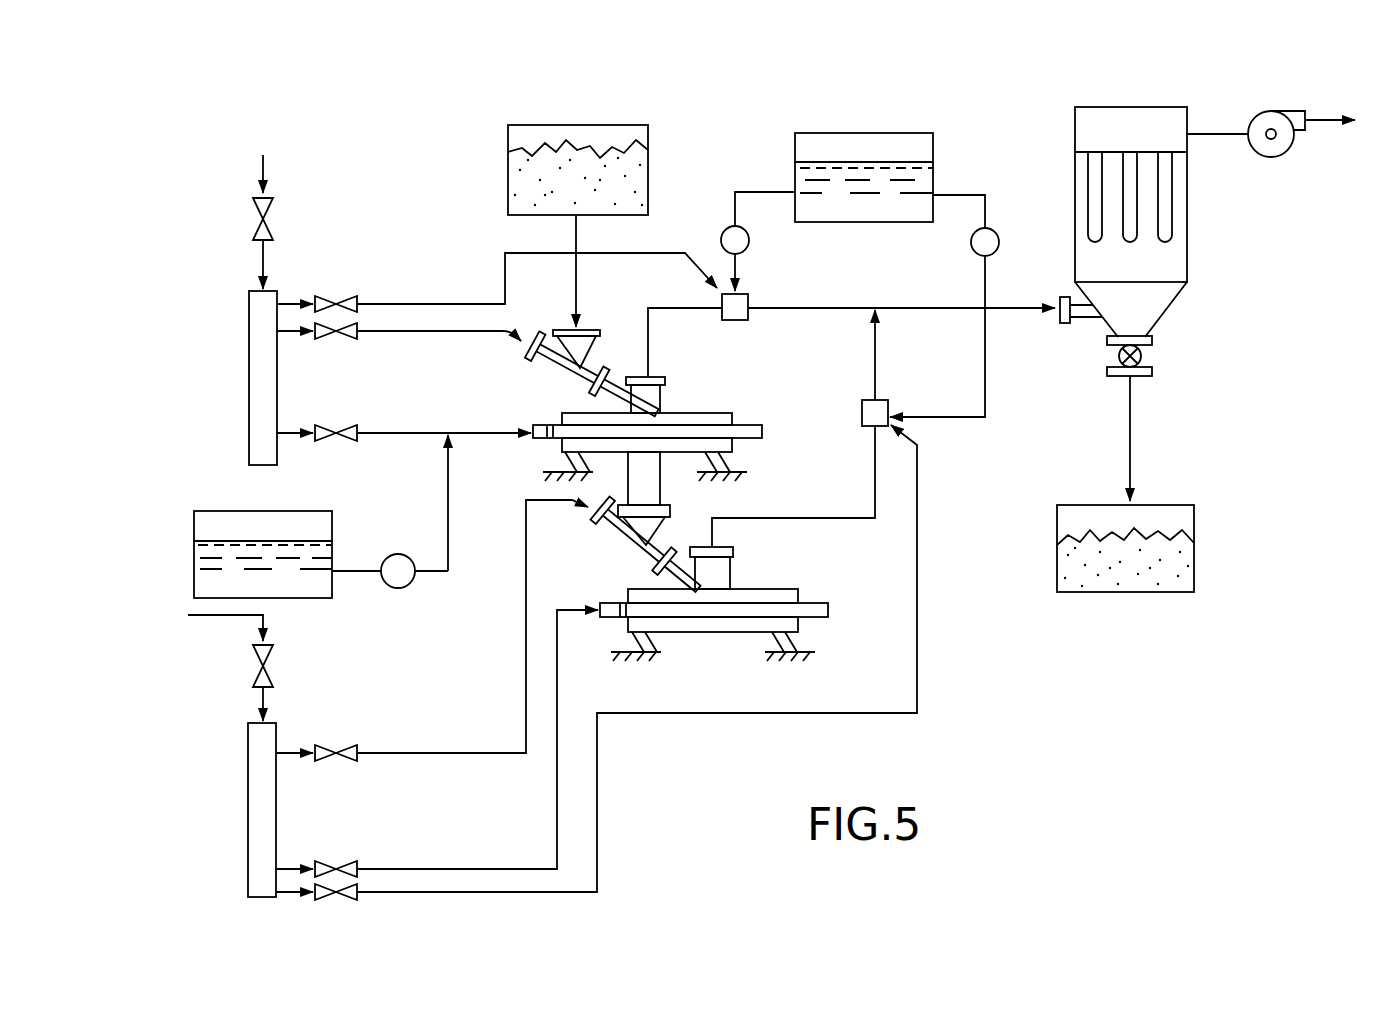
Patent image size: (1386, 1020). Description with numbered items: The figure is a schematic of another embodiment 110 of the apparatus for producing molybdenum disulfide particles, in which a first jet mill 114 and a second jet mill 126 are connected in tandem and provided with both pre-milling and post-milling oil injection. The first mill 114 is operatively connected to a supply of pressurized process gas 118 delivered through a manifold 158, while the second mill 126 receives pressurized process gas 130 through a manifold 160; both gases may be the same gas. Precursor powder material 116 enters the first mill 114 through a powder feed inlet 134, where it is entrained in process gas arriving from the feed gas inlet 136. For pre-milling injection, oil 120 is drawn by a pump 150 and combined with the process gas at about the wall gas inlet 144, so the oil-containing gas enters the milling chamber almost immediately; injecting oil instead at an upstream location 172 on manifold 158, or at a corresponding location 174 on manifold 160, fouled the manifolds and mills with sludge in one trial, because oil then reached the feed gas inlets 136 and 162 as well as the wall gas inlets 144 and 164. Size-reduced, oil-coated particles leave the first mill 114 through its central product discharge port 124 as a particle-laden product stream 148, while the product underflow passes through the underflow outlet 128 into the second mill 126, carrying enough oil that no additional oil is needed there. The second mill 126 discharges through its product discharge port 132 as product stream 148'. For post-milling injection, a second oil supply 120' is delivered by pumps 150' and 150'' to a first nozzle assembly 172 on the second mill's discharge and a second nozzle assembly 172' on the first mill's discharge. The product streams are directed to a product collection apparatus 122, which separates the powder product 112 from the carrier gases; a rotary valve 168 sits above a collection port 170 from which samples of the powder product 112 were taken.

The embodiment 110 is at (318, 83).
The powder product 112 is at (1194, 548).
The first jet mill 114 is at (709, 411).
The precursor powder material 116 is at (508, 166).
The pressurized process gas 118 is at (262, 168).
The oil 120 is at (263, 554).
The second oil supply 120' is at (890, 143).
The product collection apparatus 122 is at (1193, 270).
The product discharge port 124 is at (660, 377).
The second jet mill 126 is at (803, 593).
The underflow outlet 128 is at (661, 485).
The pressurized process gas 130 is at (200, 615).
The product discharge port 132 is at (735, 552).
The powder feed inlet 134 is at (590, 326).
The feed gas inlet 136 is at (524, 351).
The wall gas inlet 144 is at (538, 442).
The particle-laden product stream 148 is at (661, 342).
The particle-laden product stream 148' is at (827, 355).
The pump 150 is at (414, 604).
The pump 150' is at (944, 322).
The pump 150'' is at (775, 241).
The manifold 158 is at (249, 355).
The manifold 160 is at (248, 790).
The feed gas inlet 162 is at (597, 531).
The wall gas inlet 164 is at (607, 618).
The rotary valve 168 is at (1143, 354).
The collection port 170 is at (1138, 378).
The first nozzle assembly 172 is at (537, 393).
The second nozzle assembly 172' is at (888, 292).
The upstream location 174 is at (262, 695).